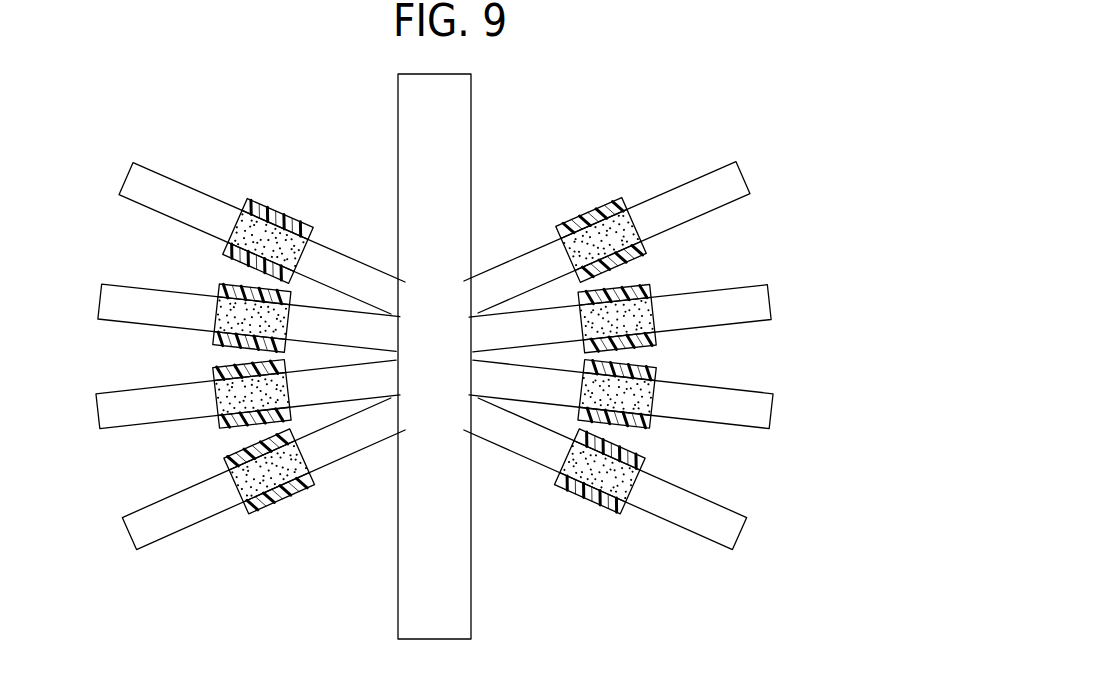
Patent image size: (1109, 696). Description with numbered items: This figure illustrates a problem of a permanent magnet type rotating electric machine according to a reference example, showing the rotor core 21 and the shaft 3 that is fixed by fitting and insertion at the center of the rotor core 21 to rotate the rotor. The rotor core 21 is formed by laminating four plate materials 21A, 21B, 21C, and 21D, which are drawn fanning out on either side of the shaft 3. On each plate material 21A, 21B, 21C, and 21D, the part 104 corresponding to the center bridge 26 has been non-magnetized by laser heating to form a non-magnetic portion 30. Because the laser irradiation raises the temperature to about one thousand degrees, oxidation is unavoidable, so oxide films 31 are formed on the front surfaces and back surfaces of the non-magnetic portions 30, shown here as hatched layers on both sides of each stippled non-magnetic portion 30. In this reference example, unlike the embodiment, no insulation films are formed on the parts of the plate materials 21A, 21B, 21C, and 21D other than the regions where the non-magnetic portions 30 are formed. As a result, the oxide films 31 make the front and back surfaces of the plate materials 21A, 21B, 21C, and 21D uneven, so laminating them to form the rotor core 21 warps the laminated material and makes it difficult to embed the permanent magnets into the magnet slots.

The shaft 3 is at (471, 95).
The rotor core 21 is at (688, 356).
The plate material 21A is at (737, 182).
The plate material 21B is at (768, 298).
The plate material 21C is at (768, 412).
The plate material 21D is at (642, 484).
The part corresponding to the center bridge 104 is at (433, 210).
The center bridge 26 is at (433, 210).
The non-magnetic portion 30 is at (592, 220).
The oxide film 31 is at (571, 212).